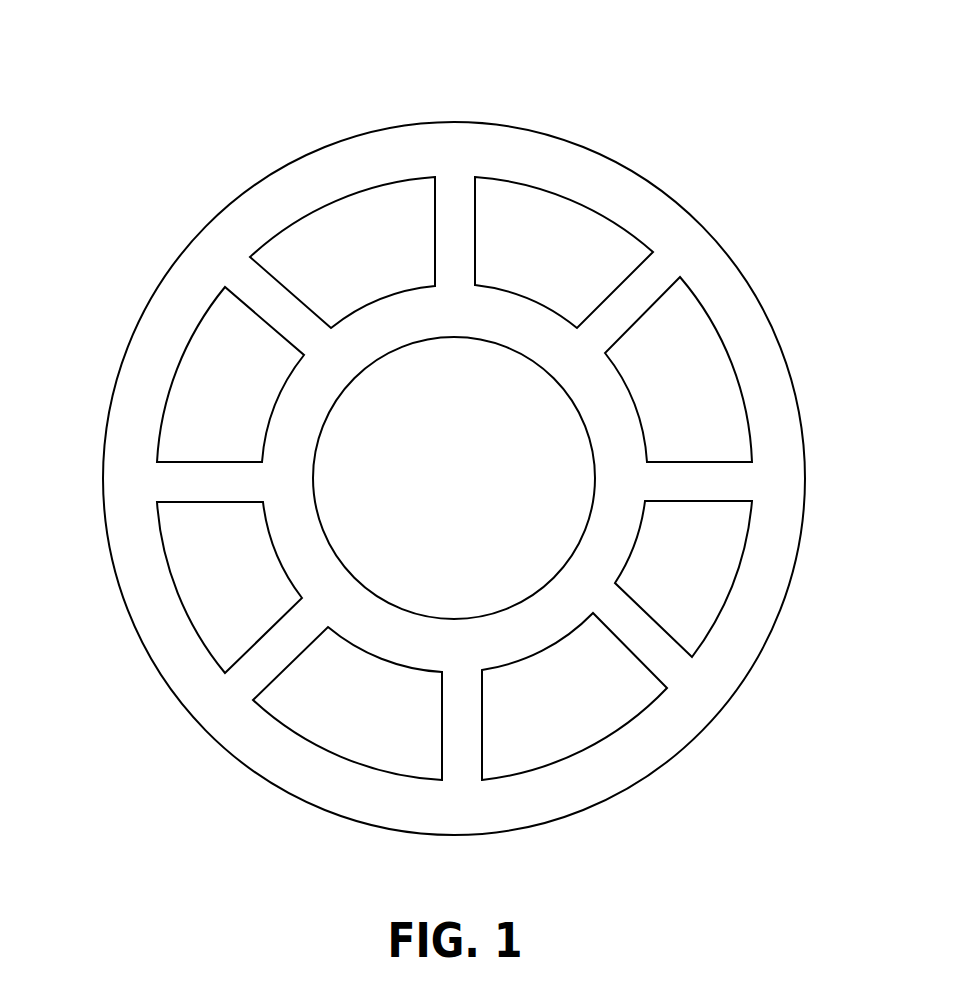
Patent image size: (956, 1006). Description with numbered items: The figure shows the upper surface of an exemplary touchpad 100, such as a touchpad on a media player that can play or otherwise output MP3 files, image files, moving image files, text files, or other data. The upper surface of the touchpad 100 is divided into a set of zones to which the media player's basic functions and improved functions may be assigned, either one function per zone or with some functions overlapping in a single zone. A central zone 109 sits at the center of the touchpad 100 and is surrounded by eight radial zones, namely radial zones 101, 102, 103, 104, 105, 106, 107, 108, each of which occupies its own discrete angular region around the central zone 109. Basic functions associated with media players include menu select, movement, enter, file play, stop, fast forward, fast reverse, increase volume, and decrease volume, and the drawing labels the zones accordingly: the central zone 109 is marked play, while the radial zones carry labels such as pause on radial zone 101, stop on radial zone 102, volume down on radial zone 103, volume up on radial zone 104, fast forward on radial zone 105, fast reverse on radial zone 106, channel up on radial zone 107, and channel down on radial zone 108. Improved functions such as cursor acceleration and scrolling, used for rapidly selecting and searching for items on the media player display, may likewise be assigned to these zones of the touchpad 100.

The touchpad 100 is at (474, 31).
The radial zone 101 is at (363, 742).
The radial zone 102 is at (575, 723).
The radial zone 103 is at (693, 607).
The radial zone 104 is at (707, 357).
The radial zone 105 is at (617, 260).
The radial zone 106 is at (297, 257).
The radial zone 107 is at (180, 418).
The radial zone 108 is at (207, 613).
The central zone 109 is at (363, 497).